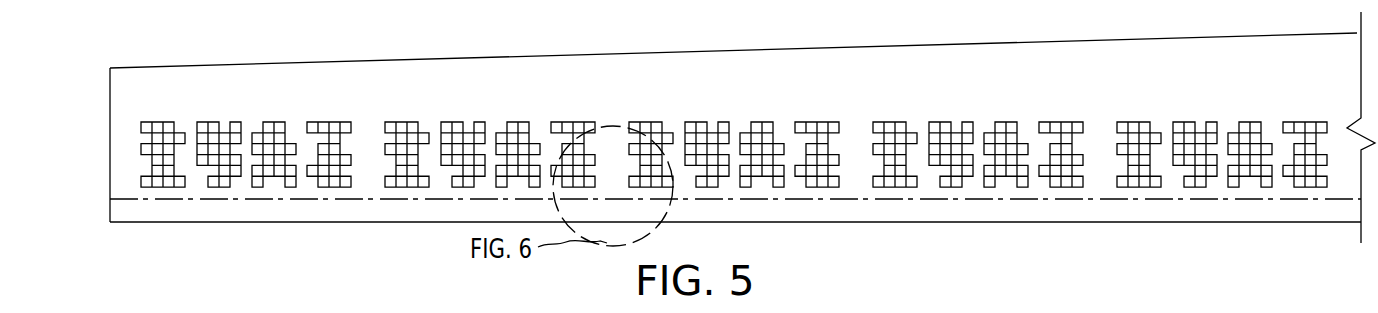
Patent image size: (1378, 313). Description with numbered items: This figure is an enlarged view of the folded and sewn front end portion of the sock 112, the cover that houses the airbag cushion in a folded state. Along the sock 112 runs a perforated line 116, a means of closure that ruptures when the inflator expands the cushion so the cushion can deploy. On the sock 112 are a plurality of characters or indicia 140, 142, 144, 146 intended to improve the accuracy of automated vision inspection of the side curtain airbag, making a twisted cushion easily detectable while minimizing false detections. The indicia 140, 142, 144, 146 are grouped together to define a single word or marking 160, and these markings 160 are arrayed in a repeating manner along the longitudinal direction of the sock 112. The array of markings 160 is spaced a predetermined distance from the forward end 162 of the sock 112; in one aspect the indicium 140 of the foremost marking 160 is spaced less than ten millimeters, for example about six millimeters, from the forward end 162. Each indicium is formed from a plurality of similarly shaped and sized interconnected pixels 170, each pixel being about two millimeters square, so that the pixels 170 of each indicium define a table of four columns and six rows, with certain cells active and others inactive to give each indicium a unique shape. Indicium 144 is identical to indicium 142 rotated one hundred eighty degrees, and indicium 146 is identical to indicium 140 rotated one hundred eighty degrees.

The sock 112 is at (685, 63).
The perforated line 116 is at (863, 199).
The indicium 140 is at (160, 122).
The indicium 142 is at (226, 122).
The indicium 144 is at (282, 122).
The indicium 146 is at (338, 122).
The marking 160 is at (623, 117).
The forward end 162 is at (109, 148).
The pixel 170 is at (393, 182).